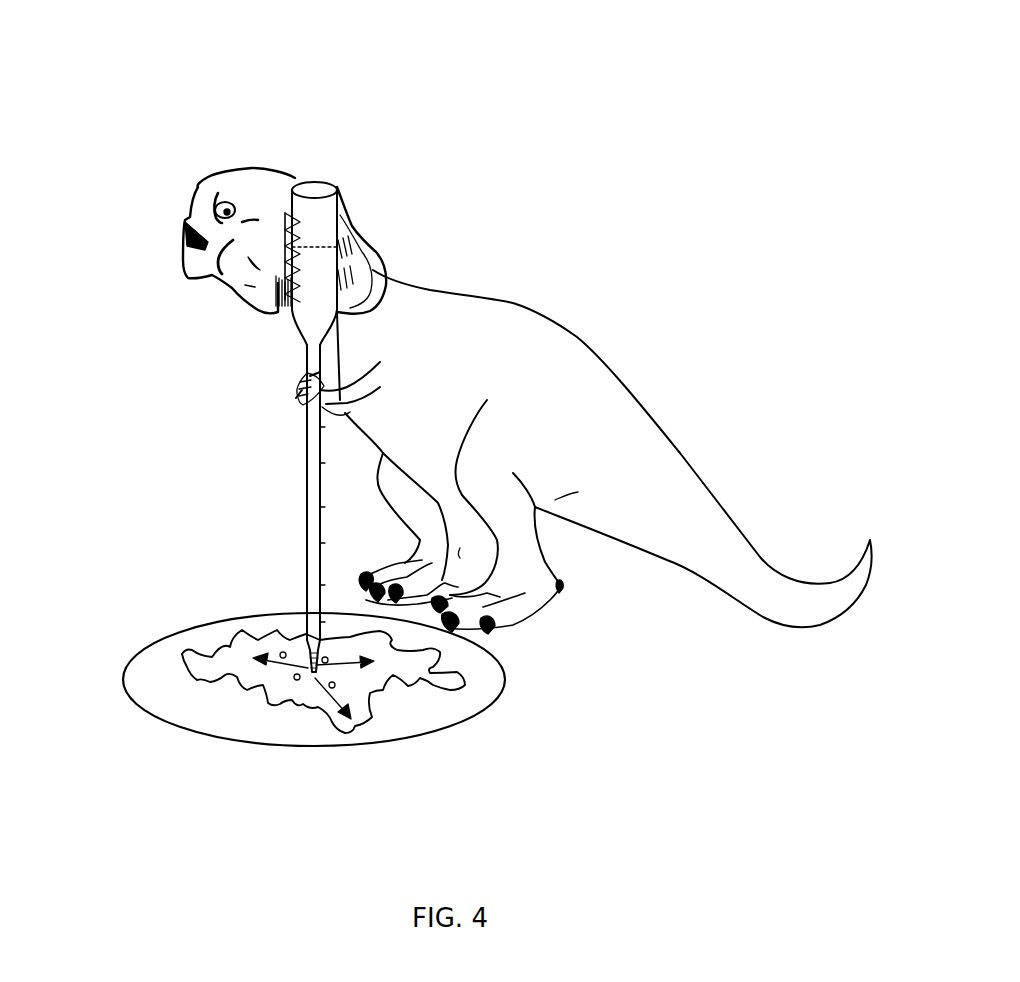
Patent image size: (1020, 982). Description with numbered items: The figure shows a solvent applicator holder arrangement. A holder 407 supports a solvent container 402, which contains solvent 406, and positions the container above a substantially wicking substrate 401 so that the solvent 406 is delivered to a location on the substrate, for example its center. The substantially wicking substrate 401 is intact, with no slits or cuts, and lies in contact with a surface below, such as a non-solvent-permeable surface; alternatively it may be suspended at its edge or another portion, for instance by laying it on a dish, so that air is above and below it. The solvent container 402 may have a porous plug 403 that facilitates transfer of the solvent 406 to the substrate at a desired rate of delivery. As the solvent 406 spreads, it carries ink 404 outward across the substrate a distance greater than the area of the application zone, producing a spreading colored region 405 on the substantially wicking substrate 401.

The substantially wicking substrate 401 is at (437, 732).
The solvent container 402 is at (307, 507).
The porous plug 403 is at (309, 663).
The ink 404 is at (310, 672).
The liquid puddle 405 is at (467, 683).
The solvent 406 is at (323, 265).
The holder 407 is at (577, 337).